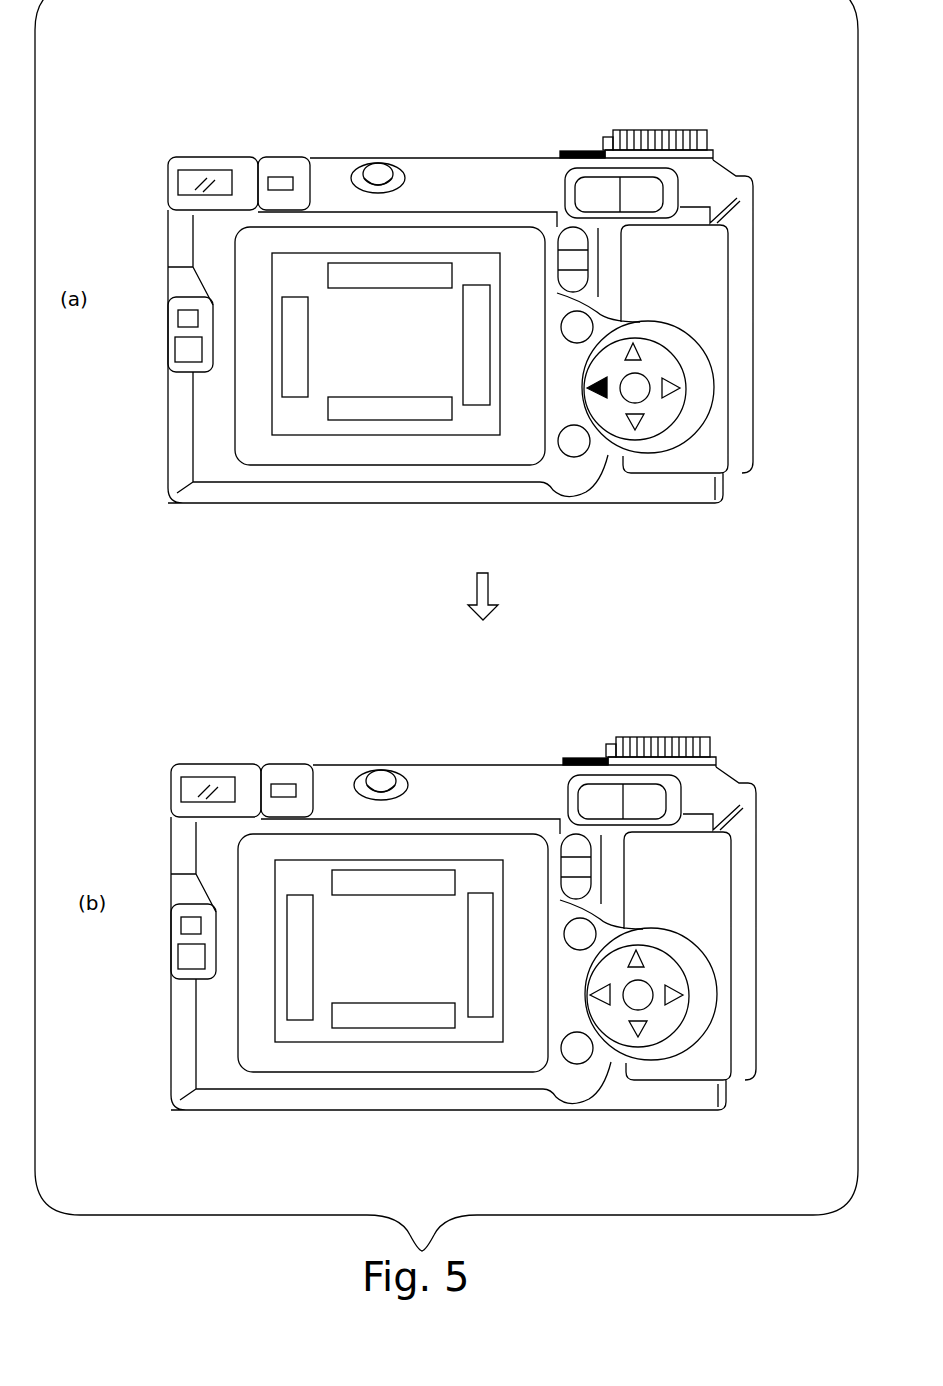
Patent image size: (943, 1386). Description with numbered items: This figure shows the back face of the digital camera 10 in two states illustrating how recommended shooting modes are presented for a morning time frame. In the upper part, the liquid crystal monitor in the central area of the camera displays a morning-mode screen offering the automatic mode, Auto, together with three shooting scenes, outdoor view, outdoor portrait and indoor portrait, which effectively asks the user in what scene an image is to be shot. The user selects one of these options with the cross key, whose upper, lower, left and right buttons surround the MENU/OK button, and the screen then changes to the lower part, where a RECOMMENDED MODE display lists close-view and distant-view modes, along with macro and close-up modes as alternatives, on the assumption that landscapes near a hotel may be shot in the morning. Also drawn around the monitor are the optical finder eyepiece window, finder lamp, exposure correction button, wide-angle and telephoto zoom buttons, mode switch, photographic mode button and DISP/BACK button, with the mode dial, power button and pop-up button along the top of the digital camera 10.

The digital camera 10 is at (447, 54).